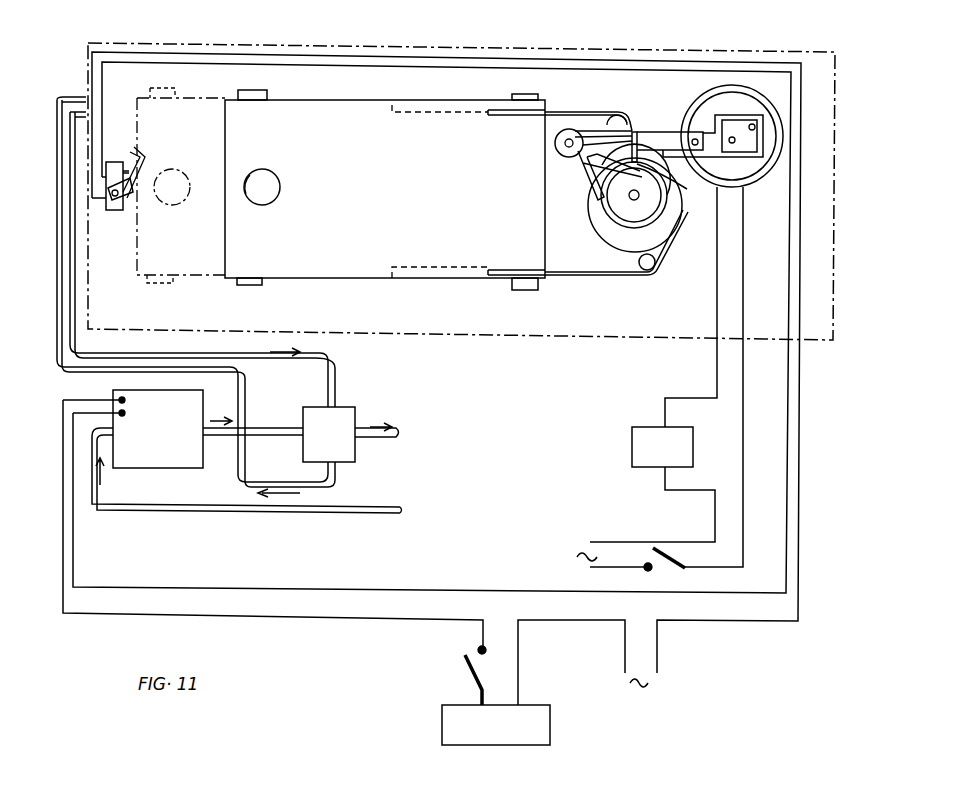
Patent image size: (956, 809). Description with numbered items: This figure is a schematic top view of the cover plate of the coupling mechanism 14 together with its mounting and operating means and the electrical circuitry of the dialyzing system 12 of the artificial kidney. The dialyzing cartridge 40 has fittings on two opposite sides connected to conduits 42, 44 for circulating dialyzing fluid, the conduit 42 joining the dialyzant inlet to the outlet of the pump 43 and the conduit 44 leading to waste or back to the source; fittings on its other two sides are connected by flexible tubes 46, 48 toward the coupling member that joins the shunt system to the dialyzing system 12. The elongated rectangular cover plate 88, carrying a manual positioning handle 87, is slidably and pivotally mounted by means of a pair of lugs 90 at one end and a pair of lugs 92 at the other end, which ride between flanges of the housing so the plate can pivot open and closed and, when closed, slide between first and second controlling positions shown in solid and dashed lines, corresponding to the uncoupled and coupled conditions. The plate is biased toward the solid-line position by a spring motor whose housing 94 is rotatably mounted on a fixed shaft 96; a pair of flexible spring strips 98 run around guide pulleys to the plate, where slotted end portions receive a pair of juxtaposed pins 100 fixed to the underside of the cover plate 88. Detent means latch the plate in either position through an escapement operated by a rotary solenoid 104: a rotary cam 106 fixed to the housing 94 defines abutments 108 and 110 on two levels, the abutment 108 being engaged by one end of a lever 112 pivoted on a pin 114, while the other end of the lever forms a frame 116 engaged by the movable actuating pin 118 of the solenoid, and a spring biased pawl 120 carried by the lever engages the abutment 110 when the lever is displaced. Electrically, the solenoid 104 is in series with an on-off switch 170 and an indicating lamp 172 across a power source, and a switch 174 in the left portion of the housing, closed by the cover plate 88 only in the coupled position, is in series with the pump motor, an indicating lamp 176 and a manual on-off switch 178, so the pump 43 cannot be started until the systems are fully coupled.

The dialyzing system 12 is at (315, 386).
The coupling mechanism 14 is at (573, 296).
The dialyzing cartridge 40 is at (350, 412).
The conduit 42 is at (265, 428).
The pump 43 is at (168, 458).
The conduit 44 is at (396, 428).
The conduit 46 is at (336, 368).
The conduit 48 is at (336, 481).
The manual positioning handle 87 is at (180, 173).
The cover plate 88 is at (375, 282).
The lugs 90 is at (524, 290).
The lugs 92 is at (177, 90).
The spring motor housing 94 is at (680, 218).
The shaft 96 is at (634, 200).
The spring strips 98 is at (610, 276).
The pins 100 is at (493, 268).
The rotary solenoid 104 is at (752, 178).
The rotary cam 106 is at (614, 210).
The abutment 108 is at (611, 188).
The abutment 110 is at (684, 188).
The lever 112 is at (588, 168).
The pin 114 is at (565, 146).
The frame 116 is at (744, 118).
The actuating pin 118 is at (755, 128).
The spring biased pawl 120 is at (637, 130).
The on-off switch 170 is at (680, 562).
The indicating lamp 172 is at (632, 462).
The switch 174 is at (118, 162).
The indicating lamp 176 is at (550, 717).
The manual on-off switch 178 is at (462, 662).